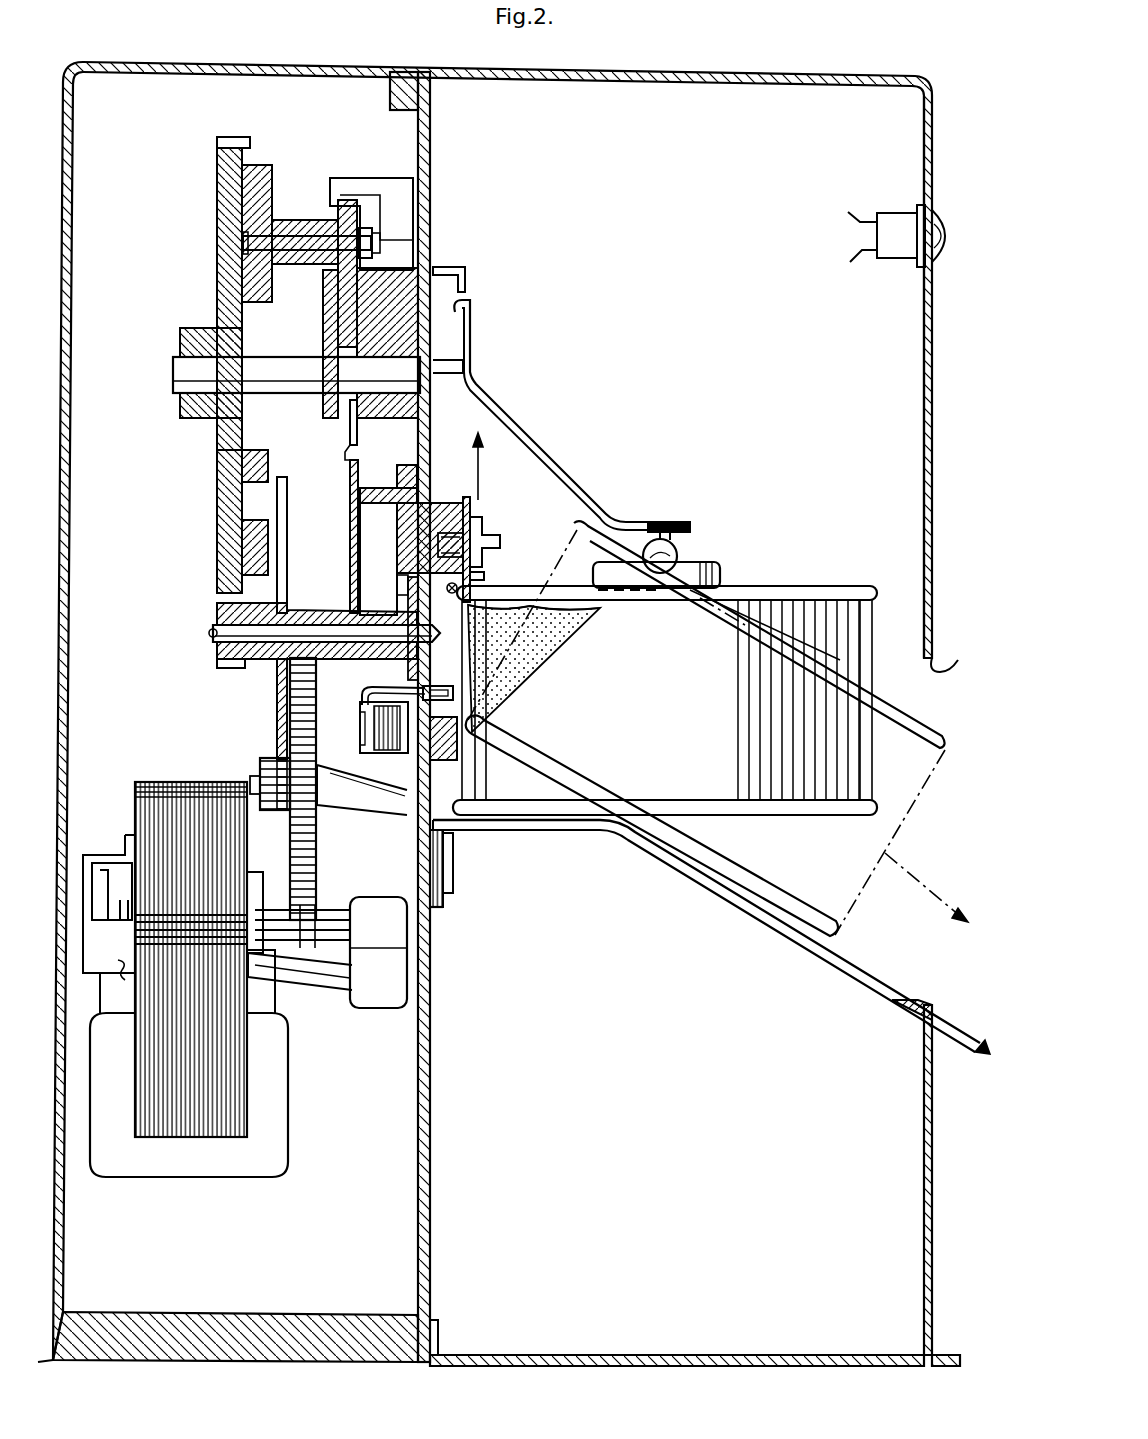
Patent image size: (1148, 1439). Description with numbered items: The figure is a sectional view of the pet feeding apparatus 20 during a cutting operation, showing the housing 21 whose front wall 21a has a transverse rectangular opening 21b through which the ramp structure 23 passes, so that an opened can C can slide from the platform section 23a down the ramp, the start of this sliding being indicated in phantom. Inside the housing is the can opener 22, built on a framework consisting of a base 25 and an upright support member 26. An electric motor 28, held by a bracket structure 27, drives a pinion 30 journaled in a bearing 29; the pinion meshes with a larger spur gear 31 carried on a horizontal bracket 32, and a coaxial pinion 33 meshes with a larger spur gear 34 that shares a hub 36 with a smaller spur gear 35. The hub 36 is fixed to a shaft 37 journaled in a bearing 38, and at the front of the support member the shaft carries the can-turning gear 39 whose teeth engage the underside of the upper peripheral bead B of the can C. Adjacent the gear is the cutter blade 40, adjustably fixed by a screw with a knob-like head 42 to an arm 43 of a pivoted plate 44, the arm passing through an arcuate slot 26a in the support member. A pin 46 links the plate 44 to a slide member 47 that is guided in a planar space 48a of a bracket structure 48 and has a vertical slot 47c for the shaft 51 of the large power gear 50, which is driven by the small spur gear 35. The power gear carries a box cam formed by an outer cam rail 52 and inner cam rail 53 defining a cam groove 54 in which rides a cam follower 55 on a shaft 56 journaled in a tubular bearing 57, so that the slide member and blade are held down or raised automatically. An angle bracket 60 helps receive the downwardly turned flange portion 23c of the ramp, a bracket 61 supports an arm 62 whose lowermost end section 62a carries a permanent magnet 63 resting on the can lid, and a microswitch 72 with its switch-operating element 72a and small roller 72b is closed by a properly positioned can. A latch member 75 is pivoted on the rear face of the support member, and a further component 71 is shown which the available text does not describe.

The pet feeding apparatus 20 is at (386, 46).
The housing 21 is at (760, 78).
The front wall 21a is at (934, 332).
The transverse rectangular opening 21b is at (959, 646).
The can opener 22 is at (490, 934).
The ramp structure 23 is at (856, 982).
The platform section 23a is at (533, 830).
The downwardly turned flange portion 23c is at (442, 906).
The base 25 is at (253, 1318).
The upright support member 26 is at (419, 1205).
The slot or opening 26a is at (432, 478).
The bracket structure 27 is at (323, 987).
The electric motor 28 is at (278, 1108).
The bearing 29 is at (396, 936).
The pinion 30 is at (333, 910).
The spur gear 31 is at (300, 847).
The horizontal bracket 32 is at (388, 808).
The pinion 33 is at (266, 758).
The spur gear 34 is at (288, 518).
The smaller spur gear 35 is at (215, 650).
The hub 36 is at (258, 662).
The shaft 37 is at (212, 632).
The bearing 38 is at (322, 610).
The can-turning gear 39 is at (480, 662).
The cutter blade 40 is at (470, 506).
The knob-like head 42 is at (490, 540).
The arm 43 is at (485, 576).
The plate 44 is at (400, 556).
The arm or pin 46 is at (378, 486).
The slide member 47 is at (349, 530).
The vertical slot 47c is at (348, 447).
The guide and bearing bracket structure 48 is at (410, 268).
The planar space 48a is at (345, 312).
The power gear 50 is at (222, 537).
The shaft 51 is at (176, 384).
The outer cam rail 52 is at (266, 164).
The inner cam rail 53 is at (245, 278).
The cam groove 54 is at (245, 492).
The cam follower 55 is at (243, 238).
The shaft 56 is at (379, 244).
The tubular bearing 57 is at (298, 222).
The angle bracket 60 is at (447, 860).
The bracket 61 is at (466, 276).
The arm 62 is at (548, 452).
The lowermost end section 62a is at (680, 522).
The permanent magnet 63 is at (703, 562).
The lamp 71 is at (948, 218).
The microswitch 72 is at (375, 741).
The switch-operating element 72a is at (378, 688).
The small roller 72b is at (478, 742).
The latch member 75 is at (383, 190).
The upper peripheral bead B is at (790, 588).
The can C is at (836, 612).